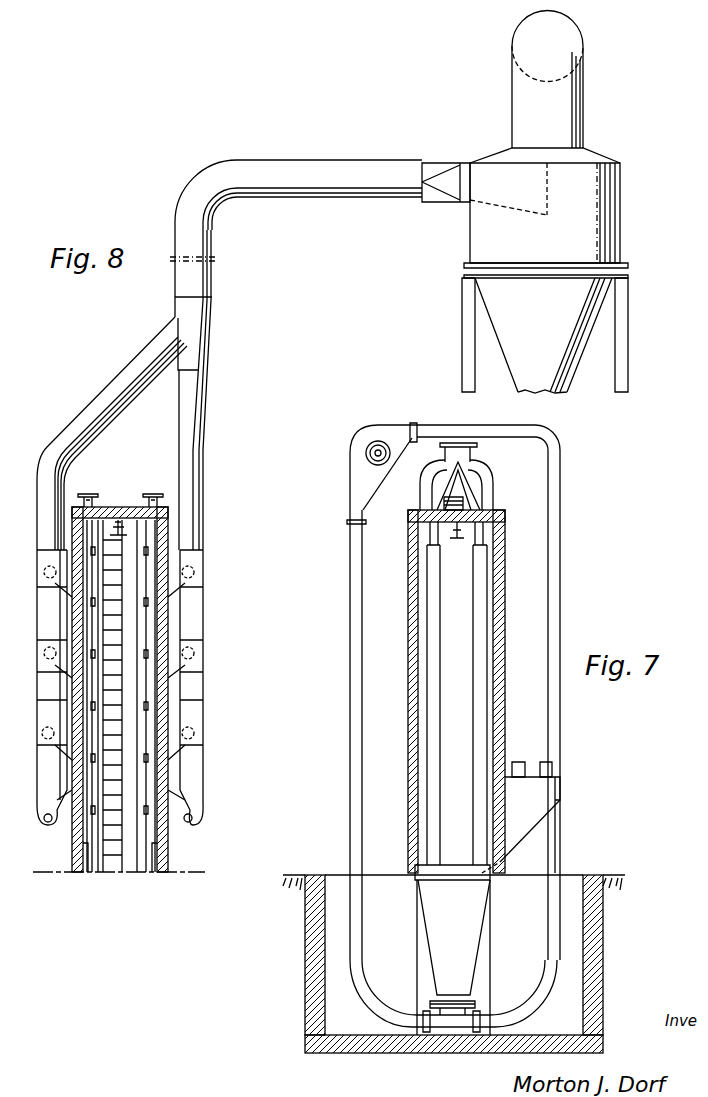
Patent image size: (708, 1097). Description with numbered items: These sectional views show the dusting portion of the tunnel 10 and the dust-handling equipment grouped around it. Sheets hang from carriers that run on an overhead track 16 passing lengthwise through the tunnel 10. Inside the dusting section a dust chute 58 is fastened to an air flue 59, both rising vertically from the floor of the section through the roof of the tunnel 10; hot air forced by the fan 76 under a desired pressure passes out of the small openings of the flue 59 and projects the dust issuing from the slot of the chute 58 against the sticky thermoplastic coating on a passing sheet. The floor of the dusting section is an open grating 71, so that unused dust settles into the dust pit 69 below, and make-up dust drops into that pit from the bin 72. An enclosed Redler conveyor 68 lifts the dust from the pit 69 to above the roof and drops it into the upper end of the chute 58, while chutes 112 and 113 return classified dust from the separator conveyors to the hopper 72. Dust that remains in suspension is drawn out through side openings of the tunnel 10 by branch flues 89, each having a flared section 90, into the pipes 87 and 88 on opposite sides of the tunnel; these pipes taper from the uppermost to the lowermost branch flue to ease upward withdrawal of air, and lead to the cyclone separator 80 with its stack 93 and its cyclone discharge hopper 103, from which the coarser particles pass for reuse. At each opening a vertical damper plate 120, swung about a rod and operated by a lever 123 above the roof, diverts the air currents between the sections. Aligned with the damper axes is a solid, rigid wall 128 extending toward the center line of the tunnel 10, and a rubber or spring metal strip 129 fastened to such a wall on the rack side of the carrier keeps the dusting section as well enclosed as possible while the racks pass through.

In FIG. 8, the tunnel 10 is at (72, 507).
In FIG. 7, the tunnel 10 is at (408, 700).
In FIG. 8, the overhead track 16 is at (116, 522).
In FIG. 7, the overhead track 16 is at (457, 540).
In FIG. 7, the dust chute 58 is at (425, 490).
In FIG. 7, the air flue 59 is at (497, 540).
In FIG. 7, the Redler conveyor 68 is at (350, 742).
In FIG. 7, the dust pit 69 is at (470, 958).
In FIG. 7, the open grating 71 is at (450, 880).
In FIG. 7, the bin 72 is at (512, 840).
In FIG. 7, the fan 76 is at (460, 487).
In FIG. 8, the cyclone separator 80 is at (475, 228).
In FIG. 8, the pipe 87 is at (43, 604).
In FIG. 8, the pipe 88 is at (203, 602).
In FIG. 8, the branch flues 89 is at (44, 655).
In FIG. 8, the flared section 90 is at (65, 688).
In FIG. 8, the exhaust stack 93 is at (512, 95).
In FIG. 8, the cyclone discharge hopper 103 is at (495, 322).
In FIG. 7, the chute 112 is at (518, 762).
In FIG. 7, the chute 113 is at (545, 762).
In FIG. 8, the damper plate 120 is at (80, 843).
In FIG. 8, the lever 123 is at (155, 493).
In FIG. 8, the rigid wall 128 is at (143, 865).
In FIG. 8, the spring metal strip 129 is at (112, 864).